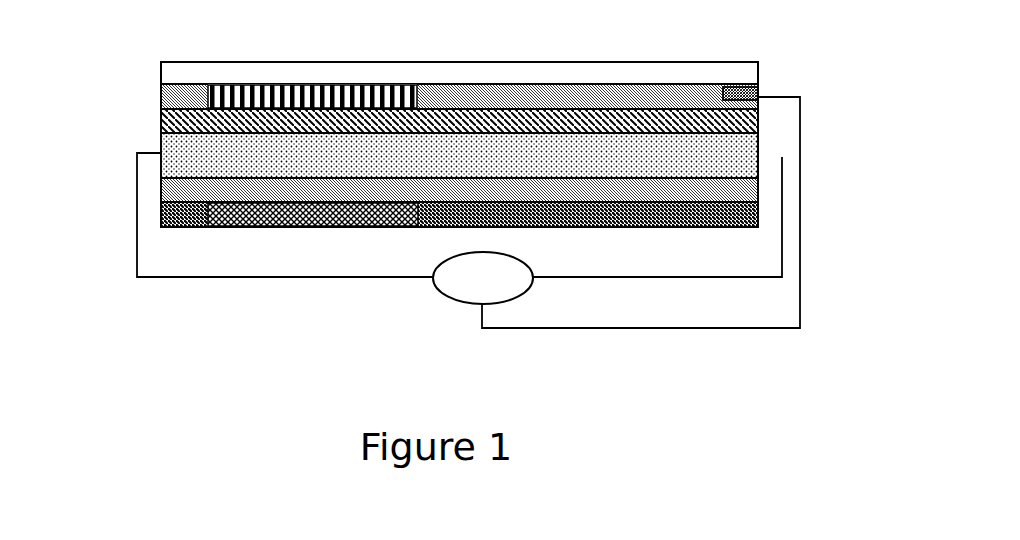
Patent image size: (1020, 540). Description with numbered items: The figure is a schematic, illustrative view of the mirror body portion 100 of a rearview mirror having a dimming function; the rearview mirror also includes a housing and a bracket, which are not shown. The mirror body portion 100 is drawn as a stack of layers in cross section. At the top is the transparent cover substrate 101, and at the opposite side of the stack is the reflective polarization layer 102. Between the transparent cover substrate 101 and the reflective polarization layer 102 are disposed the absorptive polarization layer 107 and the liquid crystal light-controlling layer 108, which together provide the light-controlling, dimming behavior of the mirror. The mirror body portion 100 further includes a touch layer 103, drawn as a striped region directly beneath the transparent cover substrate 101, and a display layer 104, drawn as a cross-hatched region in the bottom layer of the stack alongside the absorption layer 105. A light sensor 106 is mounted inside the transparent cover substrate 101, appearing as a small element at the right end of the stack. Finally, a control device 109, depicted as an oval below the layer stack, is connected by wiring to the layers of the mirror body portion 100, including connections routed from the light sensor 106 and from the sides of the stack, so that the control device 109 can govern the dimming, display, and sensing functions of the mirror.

The mirror body portion 100 is at (784, 28).
The transparent cover substrate 101 is at (154, 72).
The reflective polarization layer 102 is at (154, 186).
The touch layer 103 is at (200, 98).
The display layer 104 is at (200, 212).
The absorption layer 105 is at (768, 211).
The light sensor 106 is at (768, 91).
The absorptive polarization layer 107 is at (768, 120).
The liquid crystal light-controlling layer 108 is at (768, 157).
The control device 109 is at (468, 212).